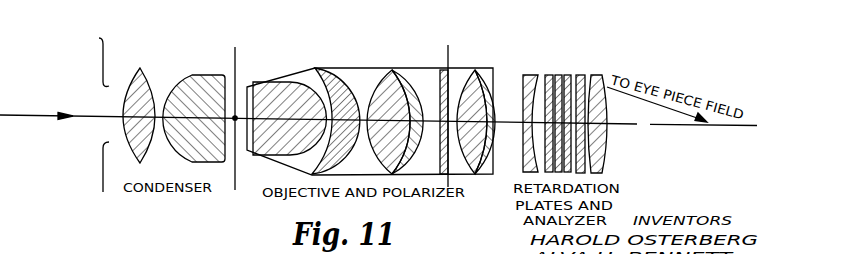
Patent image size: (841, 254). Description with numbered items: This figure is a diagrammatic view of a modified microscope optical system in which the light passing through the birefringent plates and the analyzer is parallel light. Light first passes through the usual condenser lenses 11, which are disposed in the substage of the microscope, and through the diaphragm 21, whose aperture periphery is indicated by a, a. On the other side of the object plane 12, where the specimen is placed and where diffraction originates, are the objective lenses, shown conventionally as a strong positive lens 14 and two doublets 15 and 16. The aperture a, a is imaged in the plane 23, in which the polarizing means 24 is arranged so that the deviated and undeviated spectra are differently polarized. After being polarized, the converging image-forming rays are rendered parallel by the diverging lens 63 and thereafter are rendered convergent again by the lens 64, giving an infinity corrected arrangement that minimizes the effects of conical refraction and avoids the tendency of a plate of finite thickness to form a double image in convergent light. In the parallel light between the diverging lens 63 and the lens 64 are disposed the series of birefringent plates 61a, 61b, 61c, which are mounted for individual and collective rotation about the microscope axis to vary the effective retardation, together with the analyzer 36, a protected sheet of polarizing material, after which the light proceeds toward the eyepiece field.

The diaphragm 21 is at (100, 40).
The condenser lenses 11 is at (176, 88).
The object plane 12 is at (235, 47).
The strong positive lens 14 is at (273, 80).
The doublet 15 is at (393, 70).
The polarizing means 24 is at (443, 70).
The plane 23 is at (456, 109).
The doublet 16 is at (477, 72).
The diverging lens 63 is at (532, 75).
The birefringent plate 61a is at (548, 75).
The birefringent plate 61b is at (558, 75).
The birefringent plate 61c is at (567, 75).
The analyzer 36 is at (581, 75).
The lens 64 is at (606, 77).